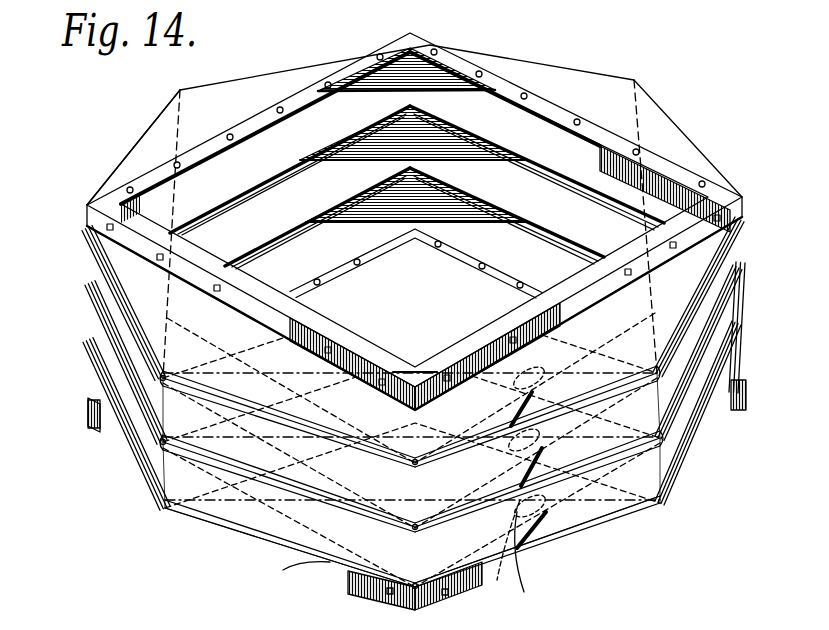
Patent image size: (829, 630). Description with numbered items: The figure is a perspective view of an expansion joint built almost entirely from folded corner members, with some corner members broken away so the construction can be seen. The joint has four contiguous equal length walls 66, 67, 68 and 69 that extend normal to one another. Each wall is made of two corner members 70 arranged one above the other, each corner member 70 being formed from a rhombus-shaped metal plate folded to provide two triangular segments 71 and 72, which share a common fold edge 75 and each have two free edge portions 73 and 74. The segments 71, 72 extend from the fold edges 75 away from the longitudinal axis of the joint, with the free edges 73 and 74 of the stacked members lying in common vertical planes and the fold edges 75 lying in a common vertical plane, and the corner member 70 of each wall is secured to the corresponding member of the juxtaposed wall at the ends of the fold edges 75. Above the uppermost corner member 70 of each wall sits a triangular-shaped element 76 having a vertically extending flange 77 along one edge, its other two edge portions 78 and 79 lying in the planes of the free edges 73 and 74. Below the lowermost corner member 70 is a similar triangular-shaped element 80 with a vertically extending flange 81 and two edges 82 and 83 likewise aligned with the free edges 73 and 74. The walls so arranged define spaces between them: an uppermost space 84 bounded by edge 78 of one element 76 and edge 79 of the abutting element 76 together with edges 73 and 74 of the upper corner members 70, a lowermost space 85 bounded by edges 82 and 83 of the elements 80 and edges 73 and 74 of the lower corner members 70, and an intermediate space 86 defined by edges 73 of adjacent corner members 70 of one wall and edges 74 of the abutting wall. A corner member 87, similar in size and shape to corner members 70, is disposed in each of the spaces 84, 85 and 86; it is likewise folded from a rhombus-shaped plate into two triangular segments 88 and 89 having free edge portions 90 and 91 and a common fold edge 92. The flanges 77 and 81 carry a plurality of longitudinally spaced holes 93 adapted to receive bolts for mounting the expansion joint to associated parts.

The wall 66 is at (722, 482).
The wall 67 is at (142, 512).
The wall 68 is at (150, 110).
The wall 69 is at (660, 82).
The corner member 70 is at (322, 446).
The triangular segment 71 is at (210, 180).
The triangular segment 72 is at (150, 390).
The free edge portion 73 is at (112, 352).
The free edge portion 74 is at (236, 434).
The fold edge 75 is at (285, 178).
The triangular-shaped element 76 is at (250, 82).
The flange 77 is at (372, 52).
The edge portion 78 is at (118, 288).
The edge portion 79 is at (320, 395).
The triangular-shaped element 80 is at (668, 516).
The flange 81 is at (430, 242).
The edge 82 is at (140, 484).
The edge 83 is at (300, 562).
The uppermost space 84 is at (537, 394).
The lowermost space 85 is at (572, 548).
The intermediate space 86 is at (539, 455).
The corner member 87 is at (334, 412).
The triangular segment 88 is at (428, 66).
The triangular segment 89 is at (395, 96).
The free edge portion 90 is at (98, 290).
The free edge portion 91 is at (402, 452).
The fold edge 92 is at (470, 142).
The holes 93 is at (578, 120).